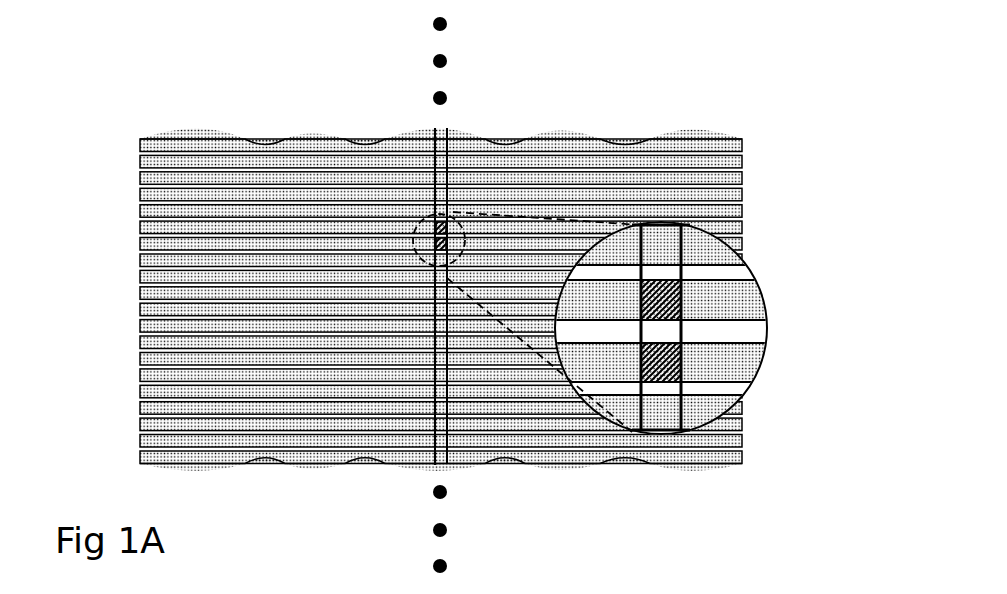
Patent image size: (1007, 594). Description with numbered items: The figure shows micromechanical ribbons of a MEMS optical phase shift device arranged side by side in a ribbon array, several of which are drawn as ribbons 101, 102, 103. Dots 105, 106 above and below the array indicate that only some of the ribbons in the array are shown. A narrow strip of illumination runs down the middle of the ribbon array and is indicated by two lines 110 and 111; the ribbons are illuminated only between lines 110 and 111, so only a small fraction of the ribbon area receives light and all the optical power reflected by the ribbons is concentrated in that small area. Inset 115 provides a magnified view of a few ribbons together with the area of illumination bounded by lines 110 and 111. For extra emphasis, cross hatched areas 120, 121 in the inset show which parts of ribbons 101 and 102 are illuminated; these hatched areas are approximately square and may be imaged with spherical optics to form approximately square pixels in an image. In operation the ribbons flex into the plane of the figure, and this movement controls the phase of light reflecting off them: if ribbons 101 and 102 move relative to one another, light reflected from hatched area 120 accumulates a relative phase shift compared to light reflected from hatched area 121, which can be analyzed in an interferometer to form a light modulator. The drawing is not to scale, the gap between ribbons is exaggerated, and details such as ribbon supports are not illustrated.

The ribbon 101 is at (140, 228).
The ribbon 102 is at (140, 245).
The ribbon 103 is at (140, 262).
The dot 105 is at (452, 96).
The dot 106 is at (452, 60).
The line 110 is at (435, 430).
The line 111 is at (449, 434).
The inset 115 is at (752, 272).
The cross hatched area 120 is at (670, 295).
The cross hatched area 121 is at (668, 373).